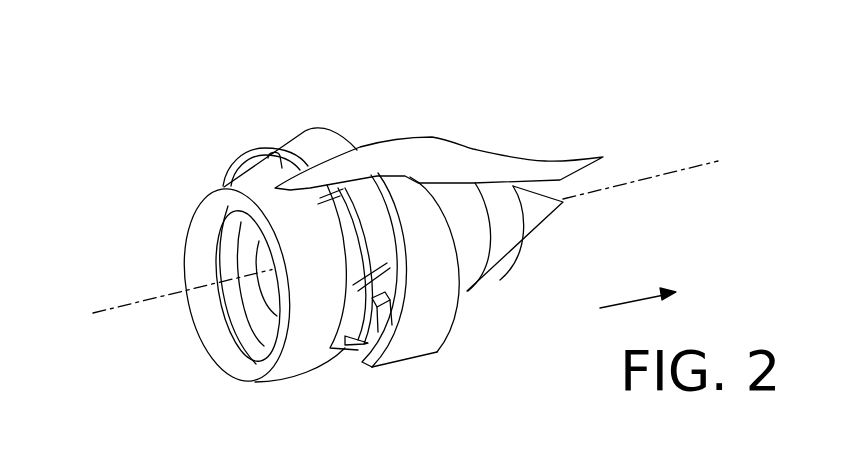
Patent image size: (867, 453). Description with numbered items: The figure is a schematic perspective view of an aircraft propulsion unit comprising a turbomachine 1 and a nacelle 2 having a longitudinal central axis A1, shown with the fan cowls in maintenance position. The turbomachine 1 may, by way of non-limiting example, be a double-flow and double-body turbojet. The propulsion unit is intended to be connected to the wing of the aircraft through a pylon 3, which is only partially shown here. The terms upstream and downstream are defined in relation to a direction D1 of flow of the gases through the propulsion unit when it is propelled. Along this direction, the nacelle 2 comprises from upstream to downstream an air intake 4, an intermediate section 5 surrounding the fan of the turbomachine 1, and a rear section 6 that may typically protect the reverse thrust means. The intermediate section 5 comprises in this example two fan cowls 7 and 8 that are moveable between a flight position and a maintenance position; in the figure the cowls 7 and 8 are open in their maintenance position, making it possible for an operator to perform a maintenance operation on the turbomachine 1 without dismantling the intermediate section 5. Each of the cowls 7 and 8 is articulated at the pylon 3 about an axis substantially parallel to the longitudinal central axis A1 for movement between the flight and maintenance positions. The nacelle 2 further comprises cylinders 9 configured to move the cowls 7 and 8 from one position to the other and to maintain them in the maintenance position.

The turbomachine 1 is at (537, 217).
The nacelle 2 is at (167, 190).
The pylon 3 is at (486, 152).
The air intake 4 is at (302, 366).
The intermediate section 5 is at (390, 58).
The rear section 6 is at (478, 260).
The fan cowl 7 is at (314, 140).
The fan cowl 8 is at (397, 193).
The cylinder 9 is at (237, 157).
The longitudinal central axis A1 is at (135, 304).
The direction of flow of the gases D1 is at (628, 300).